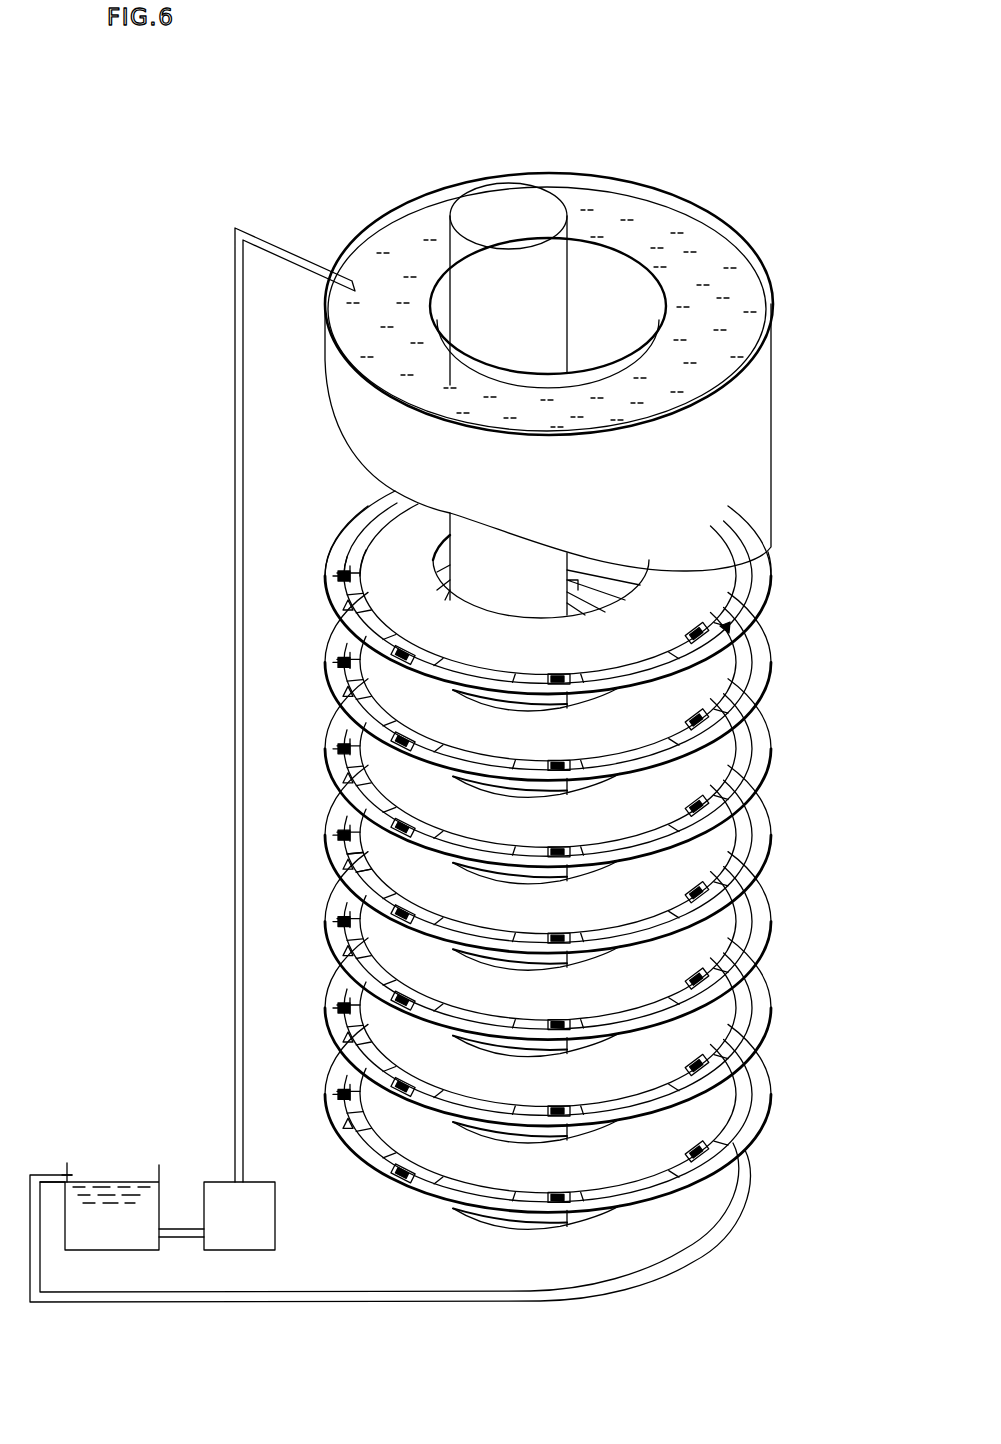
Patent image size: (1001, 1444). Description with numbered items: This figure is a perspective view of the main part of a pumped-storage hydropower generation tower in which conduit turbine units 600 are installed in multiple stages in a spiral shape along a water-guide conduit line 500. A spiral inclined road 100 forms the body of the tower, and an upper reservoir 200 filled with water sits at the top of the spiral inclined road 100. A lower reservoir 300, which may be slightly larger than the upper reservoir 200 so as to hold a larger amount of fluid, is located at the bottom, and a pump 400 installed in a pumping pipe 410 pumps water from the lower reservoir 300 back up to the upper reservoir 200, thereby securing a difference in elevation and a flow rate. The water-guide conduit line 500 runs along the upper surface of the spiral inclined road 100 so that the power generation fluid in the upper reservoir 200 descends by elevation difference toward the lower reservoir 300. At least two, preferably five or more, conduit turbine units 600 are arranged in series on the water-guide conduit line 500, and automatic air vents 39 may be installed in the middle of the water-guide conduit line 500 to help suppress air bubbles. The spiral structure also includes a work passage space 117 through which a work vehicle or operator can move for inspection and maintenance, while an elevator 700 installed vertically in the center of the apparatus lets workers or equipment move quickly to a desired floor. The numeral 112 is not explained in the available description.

The spiral inclined road 100 is at (762, 773).
The tray side wall 112 is at (352, 530).
The work passage space 117 is at (393, 607).
The automatic air vent 39 is at (353, 862).
The upper reservoir 200 is at (672, 210).
The lower reservoir 300 is at (130, 1247).
The pump 400 is at (225, 1182).
The pumping pipe 410 is at (235, 565).
The water-guide conduit line 500 is at (733, 672).
The conduit turbine unit 600 is at (733, 630).
The elevator 700 is at (508, 210).